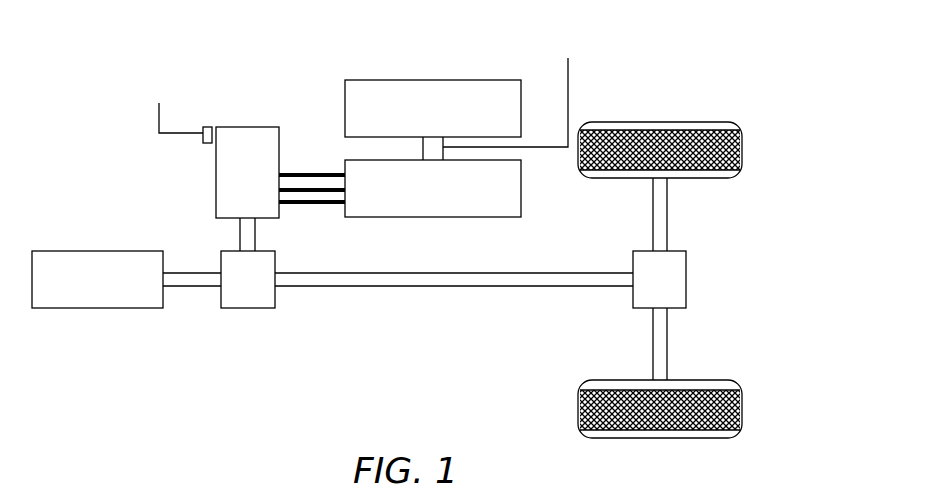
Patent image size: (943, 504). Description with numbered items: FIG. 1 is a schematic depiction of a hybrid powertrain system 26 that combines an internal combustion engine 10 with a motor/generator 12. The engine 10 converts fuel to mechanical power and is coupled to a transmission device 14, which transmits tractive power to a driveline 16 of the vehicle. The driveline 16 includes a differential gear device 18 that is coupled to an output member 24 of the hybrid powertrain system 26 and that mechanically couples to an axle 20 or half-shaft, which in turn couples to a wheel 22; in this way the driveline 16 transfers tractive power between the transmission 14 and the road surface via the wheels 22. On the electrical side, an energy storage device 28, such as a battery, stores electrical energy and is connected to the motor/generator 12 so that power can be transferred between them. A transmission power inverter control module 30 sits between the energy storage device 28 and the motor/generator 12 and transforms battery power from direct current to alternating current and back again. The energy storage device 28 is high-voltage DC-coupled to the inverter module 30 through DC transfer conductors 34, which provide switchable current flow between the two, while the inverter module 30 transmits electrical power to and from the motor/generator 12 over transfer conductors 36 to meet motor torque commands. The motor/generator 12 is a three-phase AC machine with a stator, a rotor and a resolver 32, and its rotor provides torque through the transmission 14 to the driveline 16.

The internal combustion engine 10 is at (86, 289).
The motor/generator 12 is at (237, 182).
The transmission device 14 is at (237, 289).
The driveline 16 is at (593, 325).
The differential gear device 18 is at (649, 289).
The axle 20 is at (667, 198).
The wheel 22 is at (742, 153).
The output member 24 is at (463, 288).
The hybrid powertrain system 26 is at (173, 238).
The energy storage device 28 is at (422, 118).
The transmission power inverter control module 30 is at (422, 198).
The resolver 32 is at (149, 101).
The DC transfer conductors 34 is at (559, 49).
The transfer conductors 36 is at (319, 175).